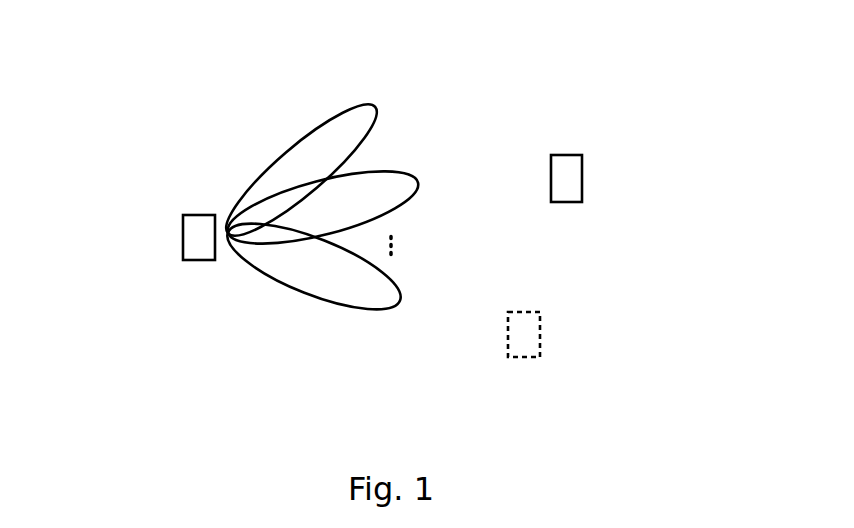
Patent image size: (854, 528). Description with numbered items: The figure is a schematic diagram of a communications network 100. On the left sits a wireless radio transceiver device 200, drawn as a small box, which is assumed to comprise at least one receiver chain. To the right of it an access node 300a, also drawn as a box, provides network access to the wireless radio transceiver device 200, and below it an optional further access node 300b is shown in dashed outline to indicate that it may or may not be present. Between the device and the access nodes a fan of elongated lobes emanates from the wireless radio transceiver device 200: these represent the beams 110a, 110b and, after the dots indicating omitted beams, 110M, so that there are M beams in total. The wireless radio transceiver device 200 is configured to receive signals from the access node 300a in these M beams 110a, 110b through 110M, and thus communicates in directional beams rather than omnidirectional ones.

The communications network 100 is at (482, 84).
The wireless radio transceiver device 200 is at (193, 234).
The beam 110a is at (286, 157).
The beam 110b is at (418, 178).
The beam 110M is at (292, 288).
The access node 300a is at (578, 173).
The further access node 300b is at (537, 330).